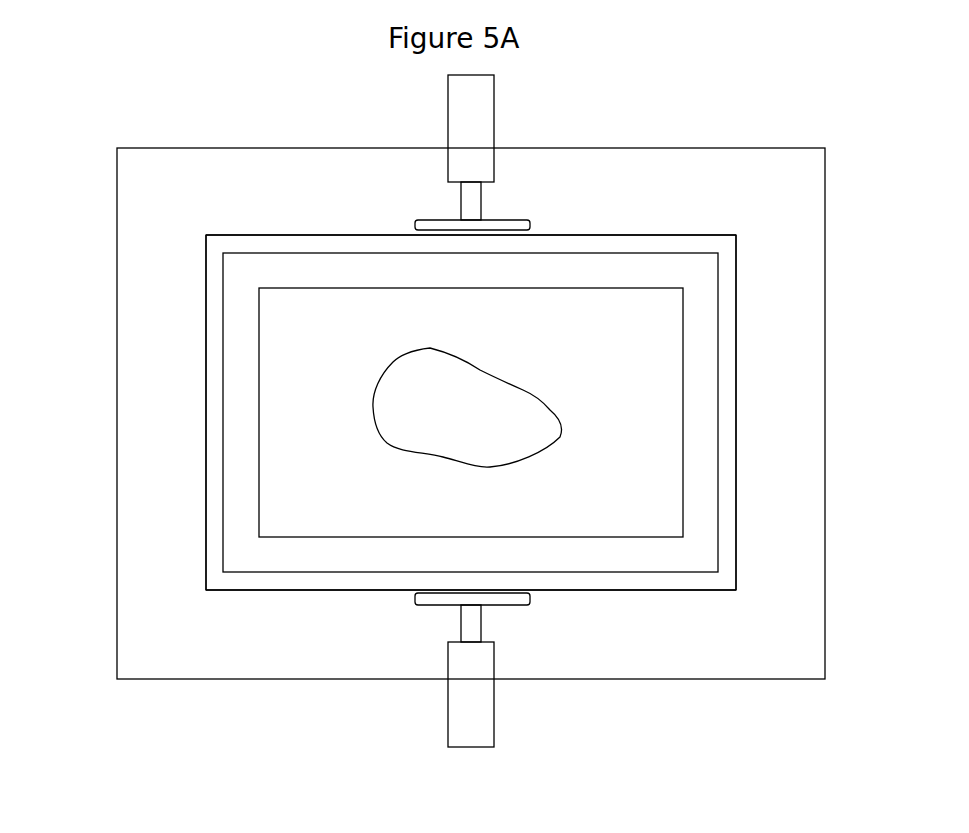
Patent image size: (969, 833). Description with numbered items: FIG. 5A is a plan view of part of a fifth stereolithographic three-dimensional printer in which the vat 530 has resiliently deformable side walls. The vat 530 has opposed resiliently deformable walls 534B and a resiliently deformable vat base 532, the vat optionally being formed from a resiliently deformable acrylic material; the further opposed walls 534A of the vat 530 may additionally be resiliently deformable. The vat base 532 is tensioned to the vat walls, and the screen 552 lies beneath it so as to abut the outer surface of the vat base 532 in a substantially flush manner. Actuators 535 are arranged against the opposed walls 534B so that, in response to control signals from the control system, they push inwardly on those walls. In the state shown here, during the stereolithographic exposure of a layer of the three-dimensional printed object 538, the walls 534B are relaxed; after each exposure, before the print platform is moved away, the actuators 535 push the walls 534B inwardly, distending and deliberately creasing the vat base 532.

The vat 530 is at (736, 257).
The vat base 532 is at (237, 312).
The opposed walls 534A is at (205, 397).
The resiliently deformable walls 534B is at (600, 233).
The actuators 535 is at (494, 172).
The 3D printed object 538 is at (490, 427).
The screen 552 is at (612, 351).